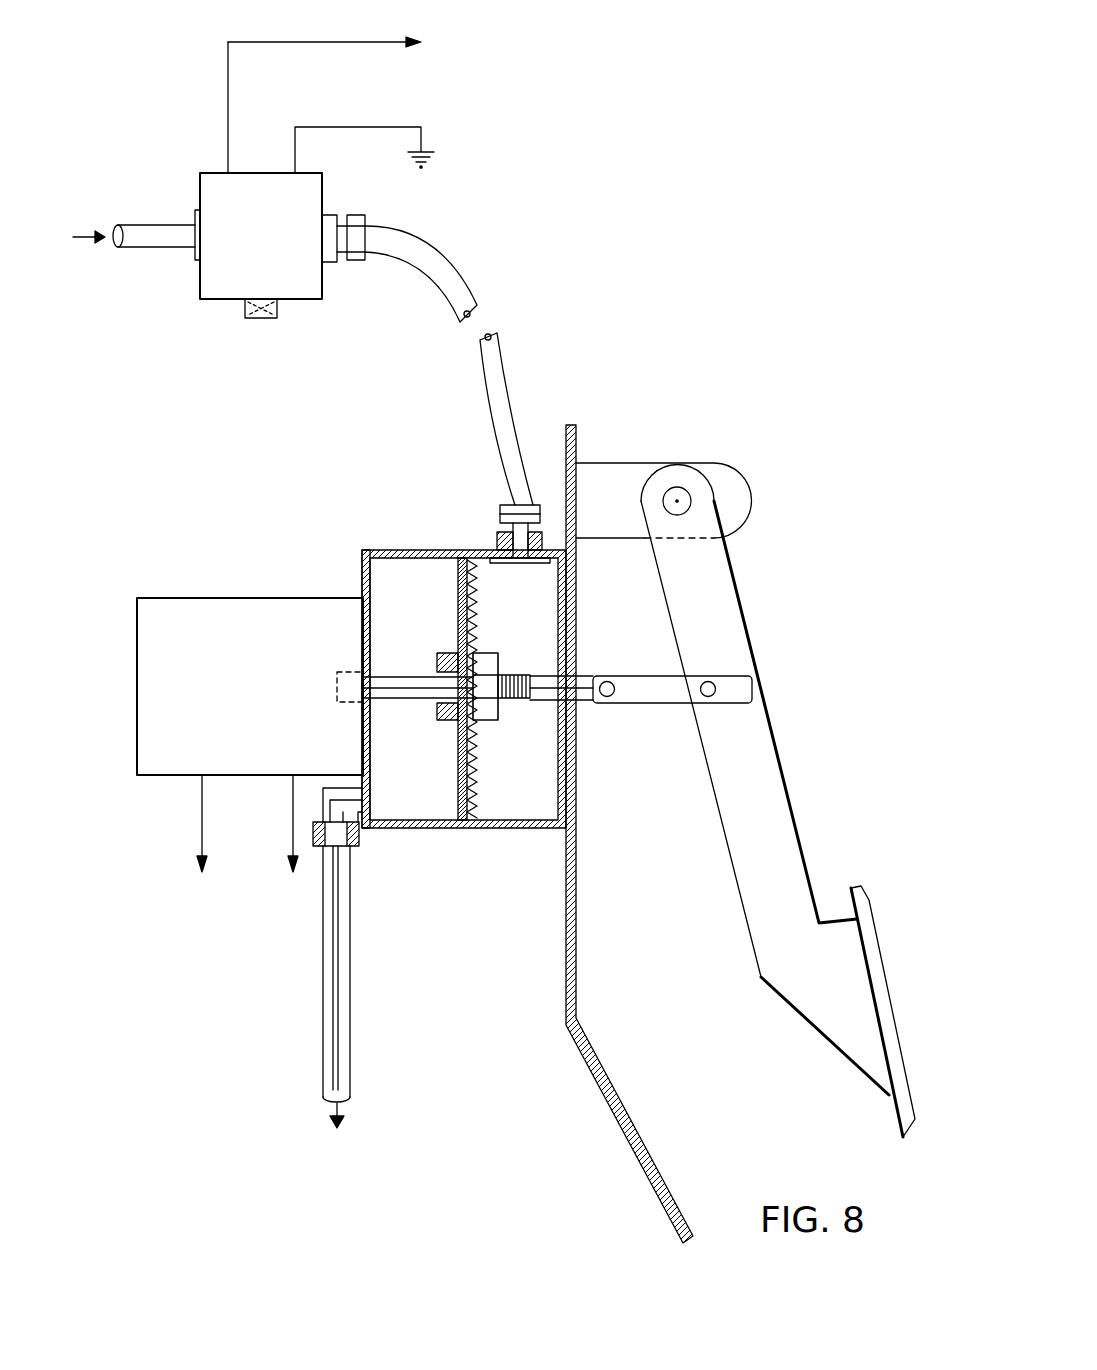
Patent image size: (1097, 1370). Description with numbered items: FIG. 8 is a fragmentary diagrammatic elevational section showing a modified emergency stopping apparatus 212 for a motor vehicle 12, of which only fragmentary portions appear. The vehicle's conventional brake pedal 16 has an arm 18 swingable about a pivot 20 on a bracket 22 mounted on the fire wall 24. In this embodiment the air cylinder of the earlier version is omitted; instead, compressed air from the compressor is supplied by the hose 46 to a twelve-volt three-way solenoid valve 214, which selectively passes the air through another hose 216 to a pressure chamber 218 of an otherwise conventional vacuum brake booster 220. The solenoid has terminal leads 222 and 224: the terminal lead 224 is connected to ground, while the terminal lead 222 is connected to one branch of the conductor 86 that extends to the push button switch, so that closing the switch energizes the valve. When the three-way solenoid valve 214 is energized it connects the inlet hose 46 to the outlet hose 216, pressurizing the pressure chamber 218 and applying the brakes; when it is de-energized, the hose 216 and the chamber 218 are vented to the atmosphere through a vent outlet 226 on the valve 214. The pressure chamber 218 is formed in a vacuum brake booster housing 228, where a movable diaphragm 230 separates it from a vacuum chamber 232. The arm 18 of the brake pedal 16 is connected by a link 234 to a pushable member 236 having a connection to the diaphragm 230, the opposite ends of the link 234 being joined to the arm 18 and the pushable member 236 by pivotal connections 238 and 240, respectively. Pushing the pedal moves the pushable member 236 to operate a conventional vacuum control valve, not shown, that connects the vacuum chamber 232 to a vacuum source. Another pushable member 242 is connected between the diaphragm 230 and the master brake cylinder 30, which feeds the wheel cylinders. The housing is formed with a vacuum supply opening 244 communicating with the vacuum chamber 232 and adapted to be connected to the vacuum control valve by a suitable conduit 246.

The motor vehicle 12 is at (573, 1170).
The brake pedal 16 is at (895, 1013).
The arm 18 is at (791, 801).
The pivot 20 is at (688, 487).
The bracket 22 is at (615, 463).
The fire wall 24 is at (567, 428).
The master brake cylinder 30 is at (193, 598).
The hose 46 is at (145, 222).
The conductor 86 is at (305, 42).
The emergency stopping apparatus 212 is at (449, 952).
The three-way solenoid valve 214 is at (213, 173).
The hose 216 is at (458, 327).
The pressure chamber 218 is at (542, 603).
The vacuum brake booster 220 is at (352, 545).
The terminal lead 222 is at (227, 83).
The terminal lead 224 is at (298, 150).
The vent outlet 226 is at (245, 305).
The vacuum brake booster housing 228 is at (492, 535).
The movable diaphragm 230 is at (452, 590).
The vacuum chamber 232 is at (363, 575).
The link 234 is at (655, 692).
The pushable member 236 is at (586, 677).
The pivotal connection 238 is at (717, 688).
The pivotal connection 240 is at (600, 705).
The pushable member 242 is at (383, 673).
The vacuum supply opening 244 is at (376, 800).
The conduit 246 is at (322, 976).